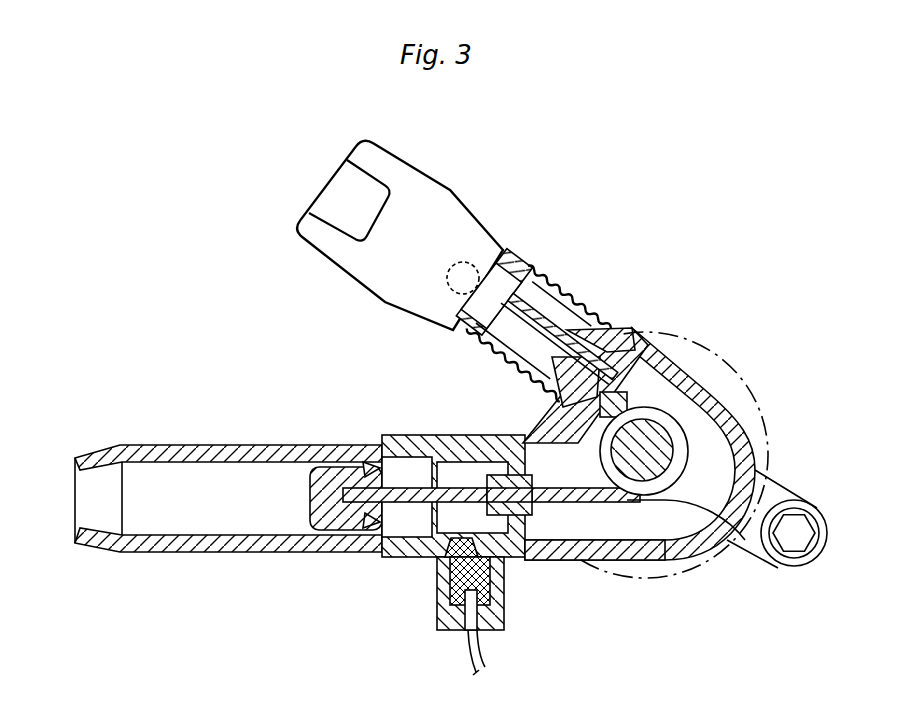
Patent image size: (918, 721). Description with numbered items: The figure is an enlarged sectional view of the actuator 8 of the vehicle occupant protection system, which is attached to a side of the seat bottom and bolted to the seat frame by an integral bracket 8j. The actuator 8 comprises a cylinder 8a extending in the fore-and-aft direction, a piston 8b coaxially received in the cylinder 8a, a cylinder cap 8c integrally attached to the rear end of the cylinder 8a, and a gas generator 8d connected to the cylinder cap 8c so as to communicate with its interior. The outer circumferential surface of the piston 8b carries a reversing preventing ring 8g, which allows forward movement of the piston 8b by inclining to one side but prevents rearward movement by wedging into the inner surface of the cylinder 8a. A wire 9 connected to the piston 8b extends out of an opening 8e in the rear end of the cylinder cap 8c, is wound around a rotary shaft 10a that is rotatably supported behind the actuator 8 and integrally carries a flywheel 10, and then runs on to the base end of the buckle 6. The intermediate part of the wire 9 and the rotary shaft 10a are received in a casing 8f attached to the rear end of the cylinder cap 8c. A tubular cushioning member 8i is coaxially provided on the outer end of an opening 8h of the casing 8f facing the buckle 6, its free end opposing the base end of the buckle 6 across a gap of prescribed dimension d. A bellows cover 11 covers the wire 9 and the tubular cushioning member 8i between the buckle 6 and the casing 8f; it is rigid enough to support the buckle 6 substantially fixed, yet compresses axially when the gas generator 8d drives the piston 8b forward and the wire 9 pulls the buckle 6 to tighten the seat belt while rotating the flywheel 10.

The buckle 6 is at (437, 196).
The actuator 8 is at (451, 465).
The cylinder 8a is at (212, 448).
The piston 8b is at (328, 512).
The cylinder cap 8c is at (443, 440).
The gas generator 8d is at (500, 602).
The opening 8e is at (478, 488).
The casing 8f is at (707, 541).
The reversing preventing ring 8g is at (365, 465).
The opening 8h is at (684, 388).
The tubular cushioning member 8i is at (630, 312).
The bracket 8j is at (794, 522).
The wire 9 is at (740, 371).
The flywheel 10 is at (683, 573).
The rotary shaft 10a is at (637, 460).
The bellows cover 11 is at (610, 320).
The prescribed dimension d is at (571, 267).